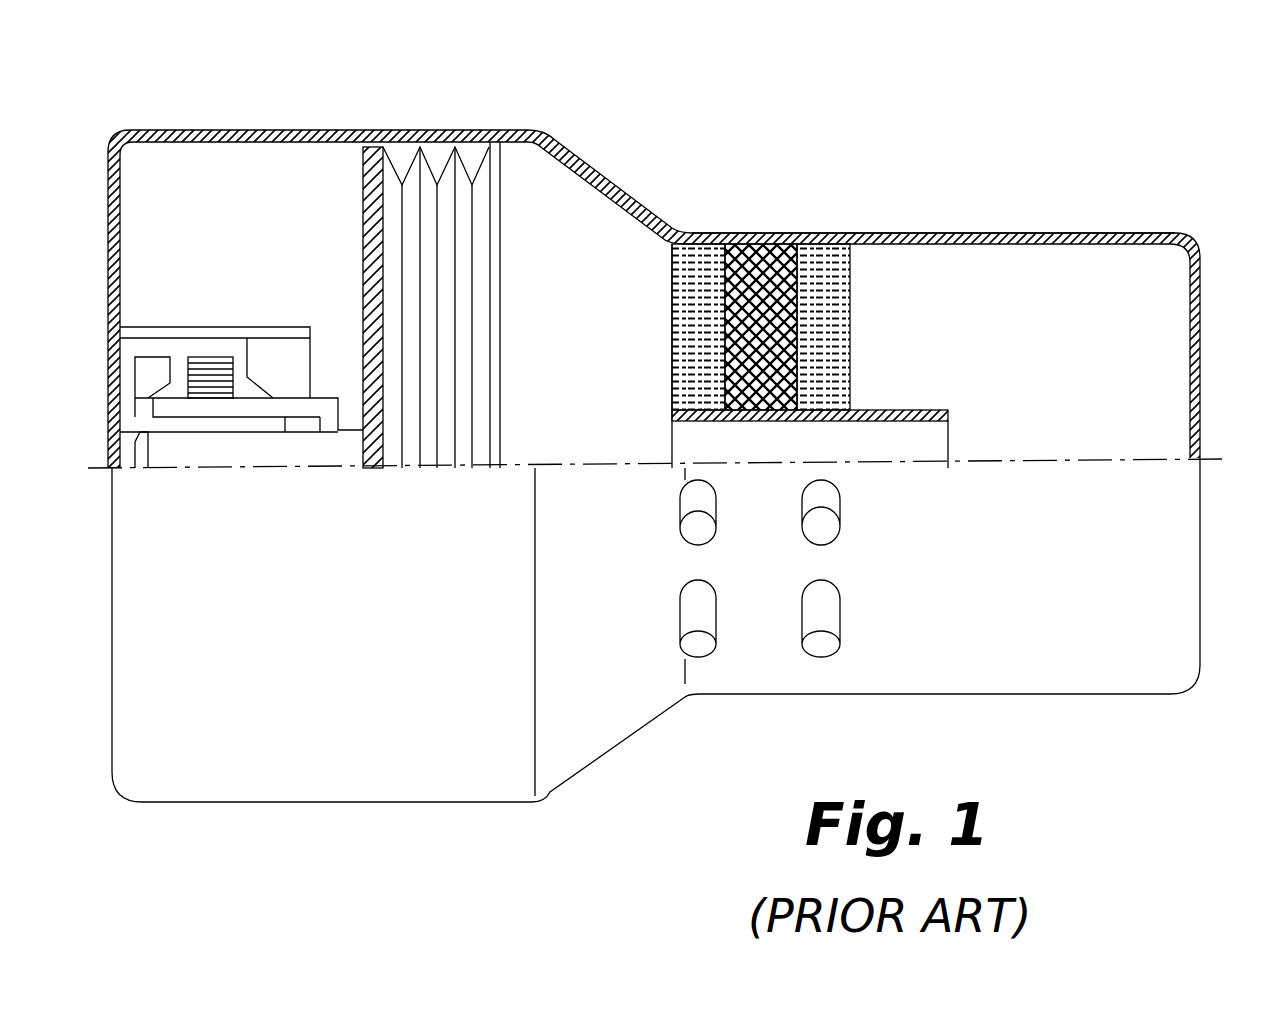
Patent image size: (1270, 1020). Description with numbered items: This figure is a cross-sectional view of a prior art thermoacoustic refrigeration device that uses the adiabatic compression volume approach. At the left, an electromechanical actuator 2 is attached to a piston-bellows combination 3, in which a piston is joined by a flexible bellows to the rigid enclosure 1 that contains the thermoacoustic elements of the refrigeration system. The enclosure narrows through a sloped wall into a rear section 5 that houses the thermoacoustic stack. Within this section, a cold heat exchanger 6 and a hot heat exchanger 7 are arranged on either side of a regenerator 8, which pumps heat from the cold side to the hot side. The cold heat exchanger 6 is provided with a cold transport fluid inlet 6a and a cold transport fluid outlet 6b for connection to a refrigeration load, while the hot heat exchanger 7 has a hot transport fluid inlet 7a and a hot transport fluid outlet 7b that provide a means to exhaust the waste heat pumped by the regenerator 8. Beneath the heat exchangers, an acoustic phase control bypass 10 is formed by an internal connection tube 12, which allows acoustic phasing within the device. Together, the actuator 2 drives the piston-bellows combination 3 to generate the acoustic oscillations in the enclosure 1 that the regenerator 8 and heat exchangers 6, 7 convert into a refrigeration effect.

The rigid enclosure 1 is at (574, 146).
The electromechanical actuator 2 is at (214, 126).
The piston-bellows combination 3 is at (402, 126).
The rear section 5 is at (725, 228).
The cold heat exchanger 6 is at (672, 305).
The hot heat exchanger 7 is at (852, 312).
The regenerator 8 is at (690, 372).
The acoustic phase control bypass 10 is at (925, 437).
The internal connection tube 12 is at (898, 410).
The cold transport fluid inlet 6a is at (680, 506).
The hot transport fluid inlet 7a is at (842, 500).
The cold transport fluid outlet 6b is at (680, 612).
The hot transport fluid outlet 7b is at (843, 605).